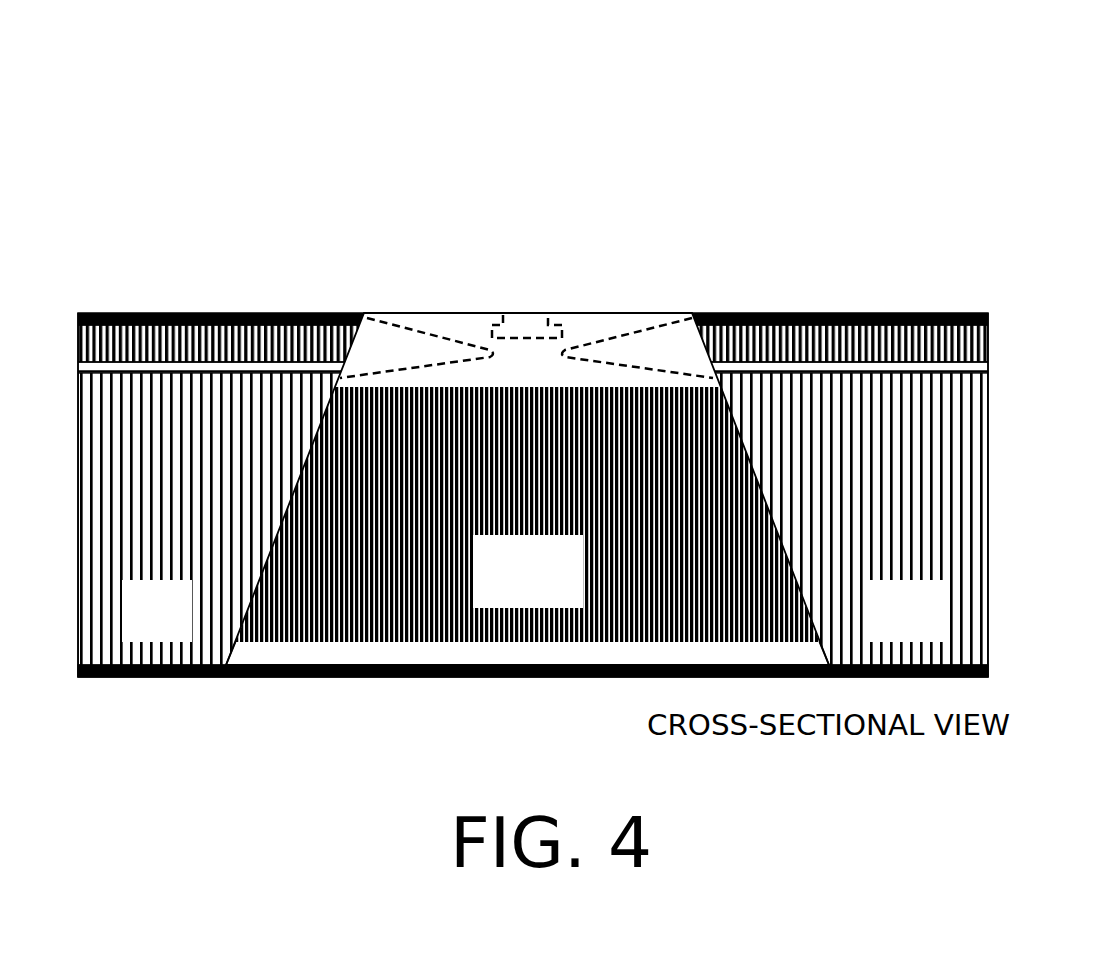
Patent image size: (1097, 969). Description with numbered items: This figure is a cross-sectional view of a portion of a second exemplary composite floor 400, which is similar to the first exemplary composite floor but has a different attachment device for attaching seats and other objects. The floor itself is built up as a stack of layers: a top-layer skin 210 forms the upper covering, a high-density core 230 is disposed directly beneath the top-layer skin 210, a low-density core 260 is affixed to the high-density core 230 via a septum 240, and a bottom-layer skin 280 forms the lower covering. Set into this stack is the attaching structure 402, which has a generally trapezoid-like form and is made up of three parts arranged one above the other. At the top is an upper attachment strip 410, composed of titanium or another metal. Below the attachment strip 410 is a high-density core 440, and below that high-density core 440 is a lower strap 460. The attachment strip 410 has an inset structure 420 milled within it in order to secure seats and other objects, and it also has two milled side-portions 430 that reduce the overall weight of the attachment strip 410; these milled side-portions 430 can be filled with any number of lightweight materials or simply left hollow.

The second exemplary composite floor 400 is at (748, 105).
The attaching structure 402 is at (808, 180).
The upper attachment strip 410 is at (622, 305).
The inset structure 420 is at (527, 327).
The milled side-portions 430 is at (375, 342).
The high-density core 440 is at (553, 586).
The lower strap 460 is at (403, 652).
The top-layer skin 210 is at (788, 312).
The high-density core 230 is at (990, 338).
The septum 240 is at (990, 365).
The low-density core 260 is at (180, 622).
The bottom-layer skin 280 is at (188, 678).